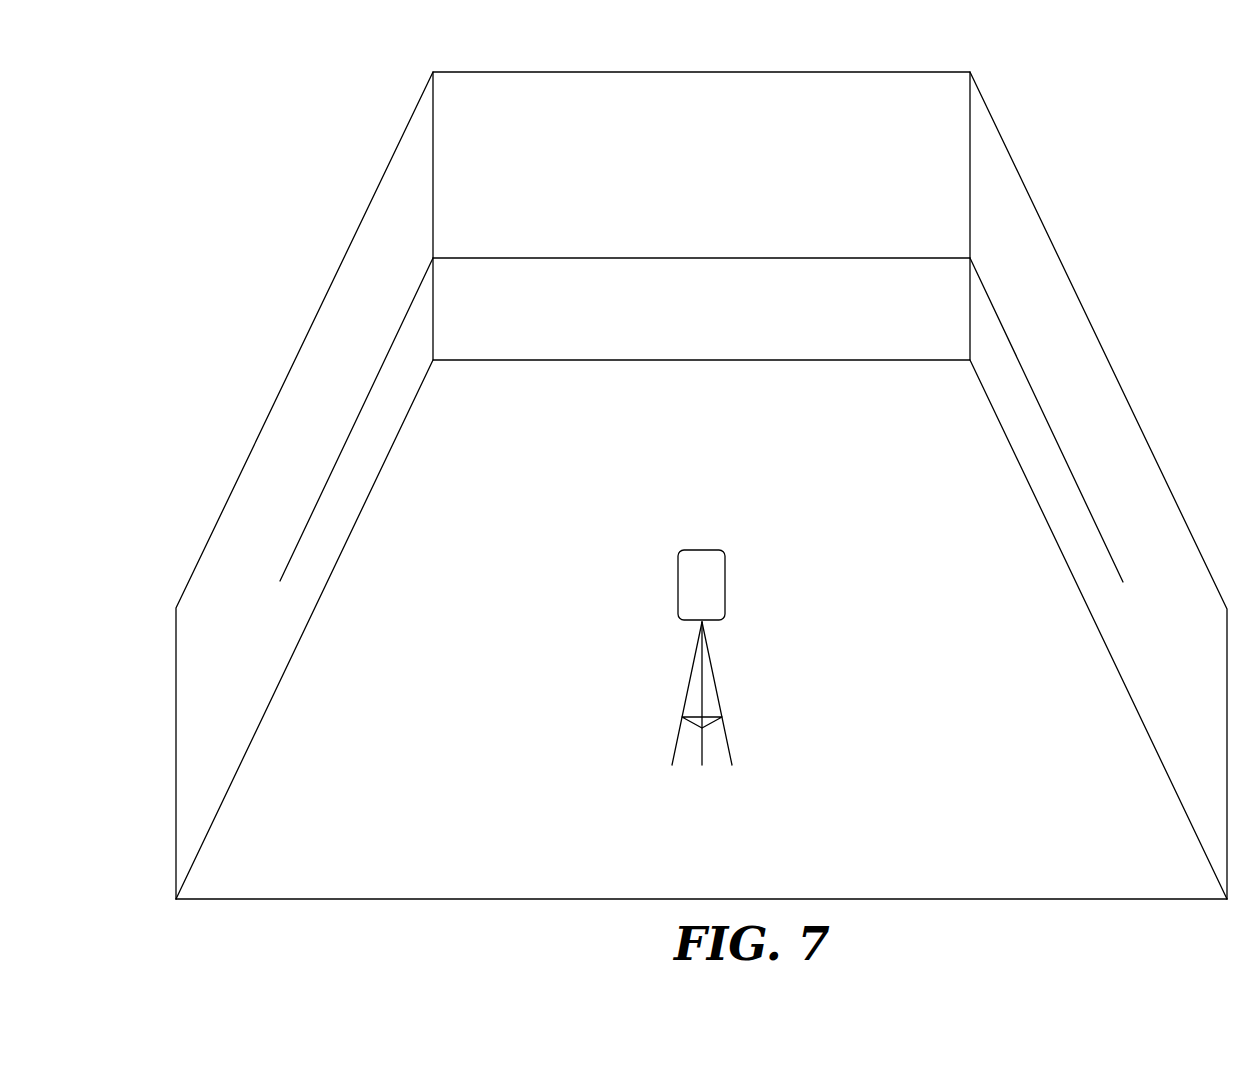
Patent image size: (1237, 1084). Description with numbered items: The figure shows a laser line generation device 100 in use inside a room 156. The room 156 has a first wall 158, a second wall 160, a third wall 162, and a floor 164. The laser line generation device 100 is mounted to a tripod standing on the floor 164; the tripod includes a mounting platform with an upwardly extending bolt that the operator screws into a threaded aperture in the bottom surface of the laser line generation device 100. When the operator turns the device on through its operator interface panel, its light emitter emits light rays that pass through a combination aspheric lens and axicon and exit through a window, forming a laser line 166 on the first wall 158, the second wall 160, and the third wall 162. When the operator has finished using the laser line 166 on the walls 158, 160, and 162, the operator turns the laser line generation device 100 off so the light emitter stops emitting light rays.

The room 156 is at (1052, 120).
The second wall 160 is at (456, 87).
The third wall 162 is at (307, 380).
The first wall 158 is at (1098, 380).
The floor 164 is at (535, 876).
The laser line 166 is at (703, 258).
The laser line generation device 100 is at (702, 548).